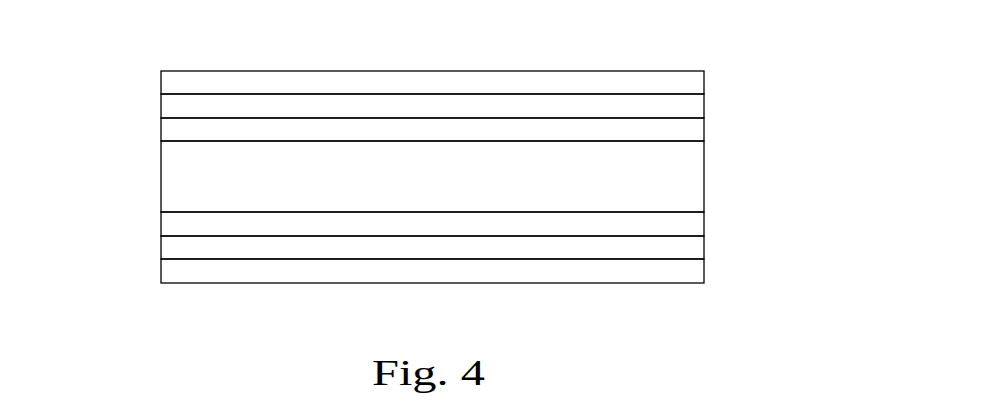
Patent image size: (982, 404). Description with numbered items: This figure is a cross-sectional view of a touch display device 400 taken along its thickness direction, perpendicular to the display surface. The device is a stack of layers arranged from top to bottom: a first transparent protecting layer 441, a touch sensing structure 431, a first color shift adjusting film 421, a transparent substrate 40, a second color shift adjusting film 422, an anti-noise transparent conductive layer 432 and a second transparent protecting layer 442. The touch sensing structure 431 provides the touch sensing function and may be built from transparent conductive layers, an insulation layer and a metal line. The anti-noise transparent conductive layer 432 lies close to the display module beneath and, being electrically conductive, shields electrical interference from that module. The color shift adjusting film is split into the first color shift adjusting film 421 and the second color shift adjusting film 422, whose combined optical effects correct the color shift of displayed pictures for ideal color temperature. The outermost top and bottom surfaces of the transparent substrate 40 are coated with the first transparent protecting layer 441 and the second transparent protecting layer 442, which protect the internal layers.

The touch display device 400 is at (422, 161).
The transparent substrate 40 is at (680, 177).
The first color shift adjusting film 421 is at (172, 129).
The second color shift adjusting film 422 is at (178, 226).
The touch sensing structure 431 is at (686, 106).
The anti-noise transparent conductive layer 432 is at (686, 248).
The first transparent protecting layer 441 is at (178, 83).
The second transparent protecting layer 442 is at (173, 273).